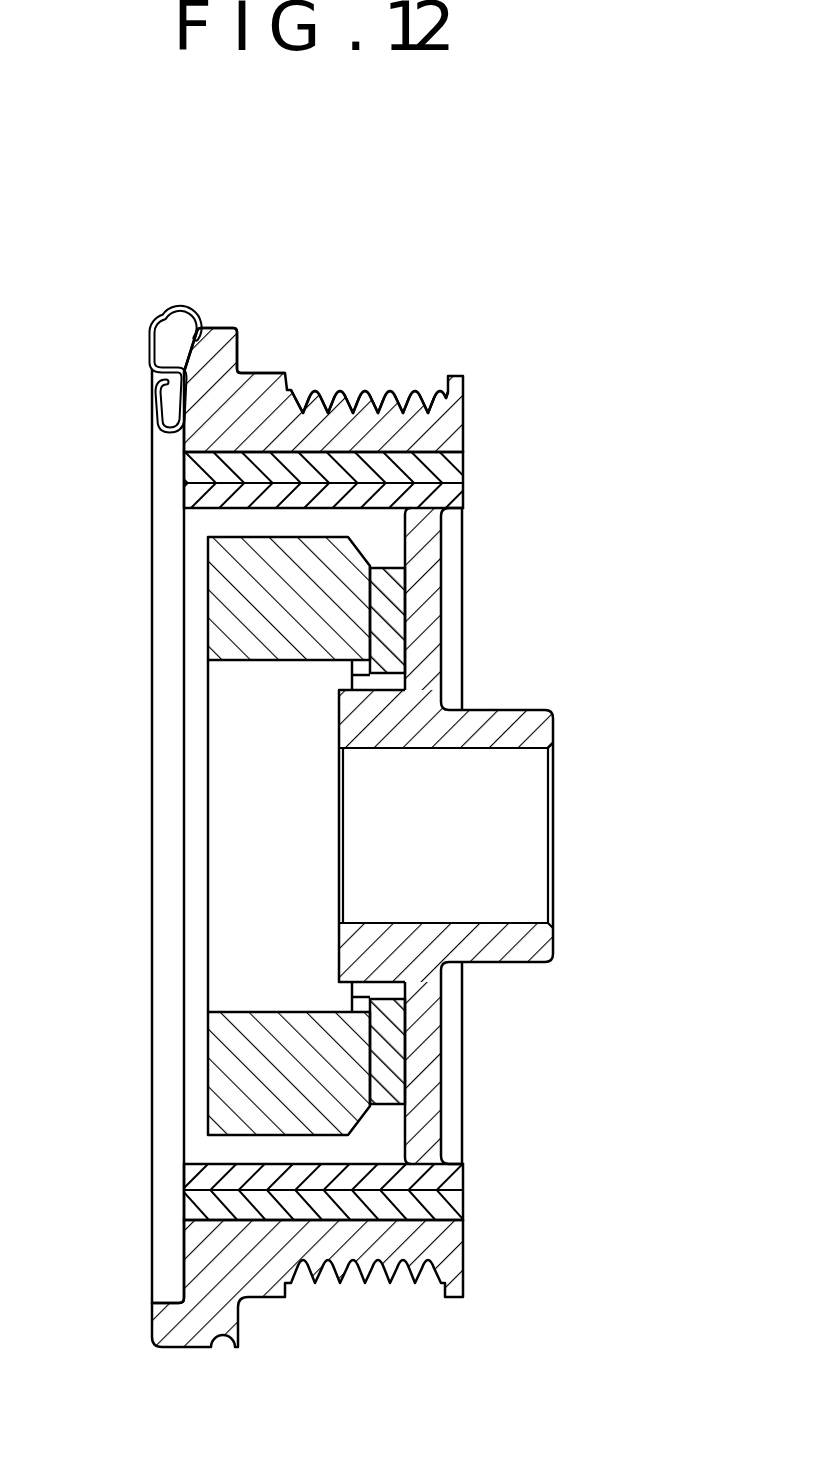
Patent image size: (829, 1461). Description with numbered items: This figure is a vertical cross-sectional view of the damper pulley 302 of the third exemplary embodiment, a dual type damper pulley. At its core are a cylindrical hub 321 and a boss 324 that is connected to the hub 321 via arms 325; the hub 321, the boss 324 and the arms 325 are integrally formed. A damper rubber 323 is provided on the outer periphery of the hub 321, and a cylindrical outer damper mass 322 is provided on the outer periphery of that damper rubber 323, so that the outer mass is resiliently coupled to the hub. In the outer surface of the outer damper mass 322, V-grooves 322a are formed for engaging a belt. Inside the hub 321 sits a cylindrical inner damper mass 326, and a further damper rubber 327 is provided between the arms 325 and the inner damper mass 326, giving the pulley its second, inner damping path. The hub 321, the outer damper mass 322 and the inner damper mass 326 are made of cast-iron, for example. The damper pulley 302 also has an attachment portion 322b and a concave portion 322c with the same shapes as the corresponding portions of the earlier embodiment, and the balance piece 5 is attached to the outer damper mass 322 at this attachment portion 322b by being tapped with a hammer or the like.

The balance piece 5 is at (142, 313).
The damper pulley 302 is at (480, 325).
The hub 321 is at (202, 492).
The outer damper mass 322 is at (262, 378).
The V-grooves 322a is at (408, 392).
The attachment portion 322b is at (158, 338).
The flange 322c is at (199, 336).
The damper rubber 323 is at (428, 462).
The boss 324 is at (530, 708).
The arms 325 is at (430, 641).
The inner damper mass 326 is at (222, 614).
The damper rubber 327 is at (402, 573).